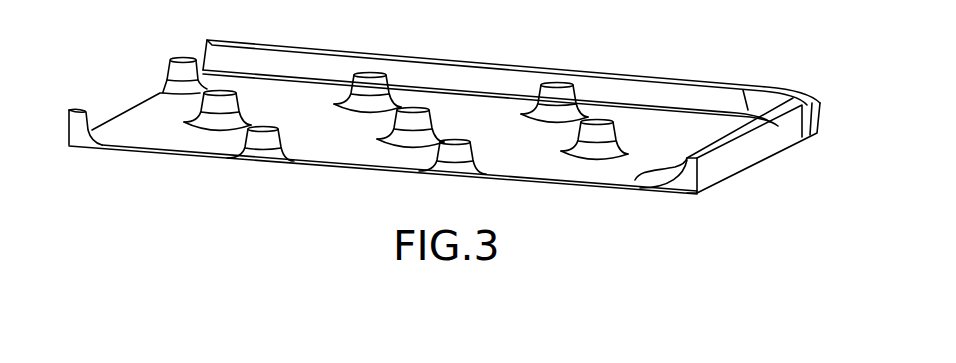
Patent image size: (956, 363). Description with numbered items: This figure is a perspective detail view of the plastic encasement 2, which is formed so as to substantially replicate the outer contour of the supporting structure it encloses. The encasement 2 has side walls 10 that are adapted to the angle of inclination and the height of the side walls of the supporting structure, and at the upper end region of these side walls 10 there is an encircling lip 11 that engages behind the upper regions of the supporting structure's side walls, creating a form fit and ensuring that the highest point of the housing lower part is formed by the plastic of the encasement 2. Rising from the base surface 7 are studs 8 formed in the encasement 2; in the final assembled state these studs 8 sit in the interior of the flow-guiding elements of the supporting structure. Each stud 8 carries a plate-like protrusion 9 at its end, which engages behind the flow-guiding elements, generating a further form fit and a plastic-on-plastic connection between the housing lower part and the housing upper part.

The encasement 2 is at (718, 167).
The base surface 7 is at (673, 128).
The studs 8 is at (565, 107).
The plate-like protrusion 9 is at (558, 85).
The side walls 10 is at (432, 78).
The encircling lip 11 is at (635, 180).